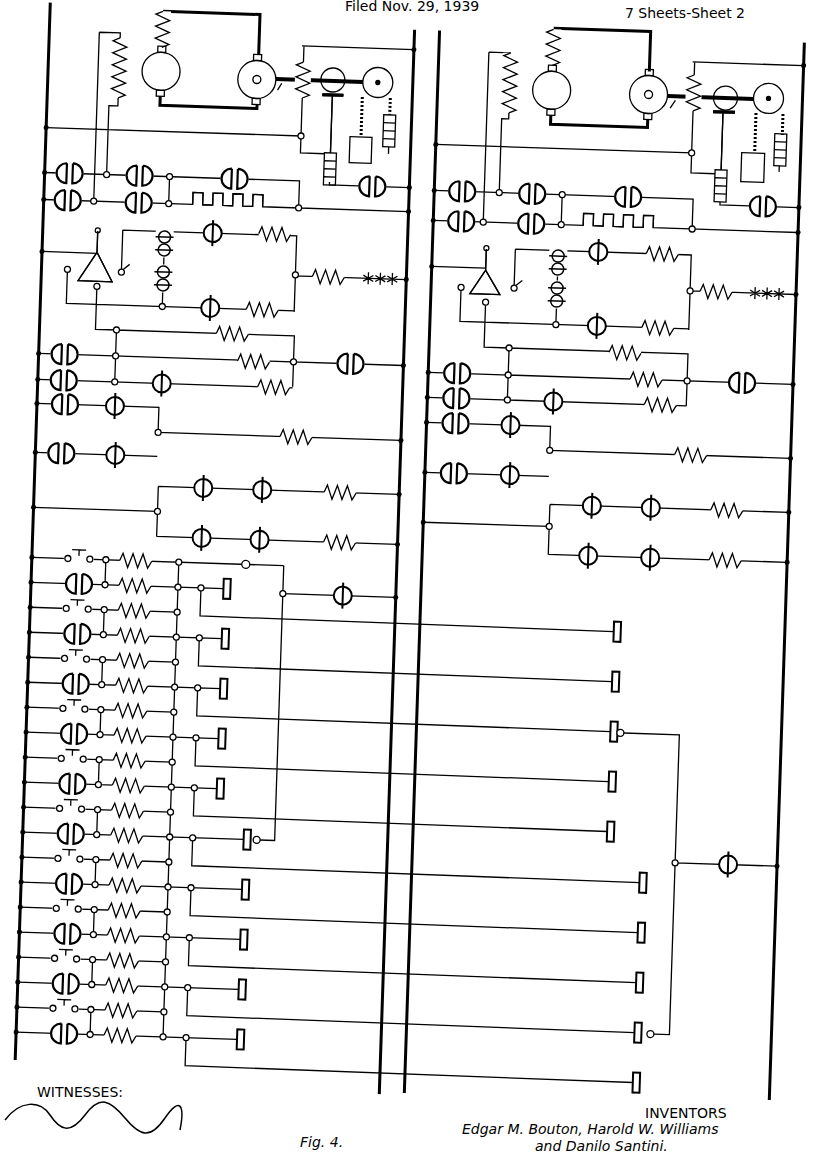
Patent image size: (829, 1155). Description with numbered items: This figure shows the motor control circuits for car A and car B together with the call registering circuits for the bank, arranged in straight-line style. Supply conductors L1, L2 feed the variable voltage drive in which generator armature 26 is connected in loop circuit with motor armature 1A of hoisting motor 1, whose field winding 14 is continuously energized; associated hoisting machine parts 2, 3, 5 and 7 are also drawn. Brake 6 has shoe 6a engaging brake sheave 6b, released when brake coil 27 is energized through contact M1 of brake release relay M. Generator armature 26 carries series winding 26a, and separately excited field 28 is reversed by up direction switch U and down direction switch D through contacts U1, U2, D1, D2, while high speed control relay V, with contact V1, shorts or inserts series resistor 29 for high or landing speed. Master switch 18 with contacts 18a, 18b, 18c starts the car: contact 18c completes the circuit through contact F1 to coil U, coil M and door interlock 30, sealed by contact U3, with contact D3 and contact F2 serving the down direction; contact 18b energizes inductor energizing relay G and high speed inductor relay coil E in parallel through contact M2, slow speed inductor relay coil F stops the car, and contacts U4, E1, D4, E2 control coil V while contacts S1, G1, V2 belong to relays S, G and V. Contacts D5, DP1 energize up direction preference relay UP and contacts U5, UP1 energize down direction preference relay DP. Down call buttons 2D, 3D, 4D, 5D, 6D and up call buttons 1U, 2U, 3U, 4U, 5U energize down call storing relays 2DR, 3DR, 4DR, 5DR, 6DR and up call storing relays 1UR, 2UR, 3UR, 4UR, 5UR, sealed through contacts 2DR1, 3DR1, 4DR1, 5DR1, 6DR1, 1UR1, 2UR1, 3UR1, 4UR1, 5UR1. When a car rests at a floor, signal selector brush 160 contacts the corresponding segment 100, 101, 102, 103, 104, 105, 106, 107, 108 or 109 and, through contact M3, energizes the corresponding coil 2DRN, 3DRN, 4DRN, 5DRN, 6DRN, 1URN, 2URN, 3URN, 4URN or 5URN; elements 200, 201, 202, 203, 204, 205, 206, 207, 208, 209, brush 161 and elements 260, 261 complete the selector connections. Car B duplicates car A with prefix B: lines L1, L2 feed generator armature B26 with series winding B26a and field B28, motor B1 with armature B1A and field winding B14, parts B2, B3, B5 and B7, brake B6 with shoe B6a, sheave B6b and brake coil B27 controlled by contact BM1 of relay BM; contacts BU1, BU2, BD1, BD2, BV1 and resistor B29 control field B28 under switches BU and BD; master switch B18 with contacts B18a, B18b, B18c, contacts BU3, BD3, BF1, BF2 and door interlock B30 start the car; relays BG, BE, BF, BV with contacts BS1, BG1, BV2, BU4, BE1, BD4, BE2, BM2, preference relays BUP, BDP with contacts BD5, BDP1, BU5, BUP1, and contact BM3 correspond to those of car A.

The supply line L1 is at (430, 1085).
The supply line L2 is at (787, 1078).
The resistor 28 is at (118, 58).
The field resistor 26a is at (152, 36).
The generator 26 is at (164, 70).
The motor 1 is at (265, 47).
The motor armature 1A is at (222, 87).
The motor shaft 7 is at (278, 98).
The resistor 14 is at (309, 77).
The drum 6b is at (340, 73).
The drum 2 is at (382, 76).
The drum bar 6a is at (327, 107).
The cable 6 is at (341, 124).
The counterweight A is at (358, 142).
The cable coil 3 is at (396, 121).
The cable 5 is at (388, 157).
The coil 27 is at (310, 176).
The contact M1 is at (382, 182).
The resistor 29 is at (239, 195).
The contact U1 is at (69, 167).
The contact D1 is at (147, 169).
The contact V1 is at (234, 173).
The contact D2 is at (67, 206).
The contact U2 is at (126, 198).
The relay coil F1 is at (199, 231).
The relay coil U is at (276, 229).
The relay U3 is at (178, 244).
The relay D3 is at (180, 279).
The relay coil M is at (328, 267).
The lamp 30 is at (379, 263).
The mercury switch 18 is at (72, 257).
The switch contact 18a is at (60, 262).
The switch contact 18b is at (91, 299).
The switch contact 18c is at (136, 266).
The relay coil F2 is at (217, 304).
The relay coil D is at (262, 302).
The relay coil G is at (232, 327).
The contact S1 is at (72, 348).
The relay coil E is at (253, 354).
The contact M2 is at (350, 358).
The contact G1 is at (73, 375).
The relay coil V2 is at (174, 380).
The relay coil F is at (273, 381).
The contact U4 is at (74, 400).
The relay coil E1 is at (126, 403).
The relay coil V is at (296, 427).
The contact D4 is at (61, 447).
The relay coil E2 is at (122, 449).
The relay coil D5 is at (201, 481).
The relay coil DP1 is at (257, 483).
The relay coil UP is at (340, 485).
The relay coil U5 is at (204, 530).
The relay coil UP1 is at (262, 531).
The relay coil DP is at (339, 534).
The terminal 160 is at (232, 557).
The relay coil M3 is at (351, 590).
The terminal 161 is at (266, 831).
The push button 5D is at (81, 549).
The resistor 5DR is at (136, 554).
The contact 5DR1 is at (66, 581).
The resistor 5DRN is at (146, 582).
The switch 100 is at (210, 586).
The switch 200 is at (624, 630).
The push button 4D is at (79, 599).
The resistor 4DR is at (134, 604).
The contact 4DR1 is at (64, 631).
The resistor 4DRN is at (144, 632).
The switch 101 is at (209, 636).
The switch 201 is at (624, 680).
The push button 3D is at (77, 649).
The resistor 3DR is at (132, 654).
The contact 3DR1 is at (62, 681).
The resistor 3DRN is at (142, 682).
The switch 102 is at (209, 686).
The switch 202 is at (624, 724).
The contact 260 is at (630, 723).
The push button 2D is at (76, 699).
The resistor 2DR is at (131, 704).
The contact 2DR1 is at (61, 730).
The resistor 2DRN is at (141, 732).
The switch 103 is at (208, 736).
The switch 203 is at (628, 781).
The push button 1U is at (74, 749).
The resistor 1UR is at (129, 754).
The contact 1UR1 is at (59, 780).
The resistor 1URN is at (139, 782).
The switch 104 is at (206, 787).
The switch 204 is at (628, 832).
The push button 6D is at (72, 799).
The resistor 6DR is at (127, 804).
The contact 6DR1 is at (57, 830).
The resistor 6DRN is at (137, 832).
The switch 105 is at (229, 837).
The switch 205 is at (622, 878).
The push button 5U is at (71, 849).
The resistor 5UR is at (126, 854).
The contact 5UR1 is at (56, 880).
The resistor 5URN is at (136, 882).
The switch 106 is at (230, 887).
The switch 206 is at (618, 930).
The push button 4U is at (69, 899).
The resistor 4UR is at (124, 904).
The contact 4UR1 is at (54, 930).
The resistor 4URN is at (134, 932).
The switch 107 is at (228, 935).
The switch 207 is at (619, 980).
The push button 3U is at (67, 949).
The resistor 3UR is at (122, 954).
The contact 3UR1 is at (52, 980).
The resistor 3URN is at (132, 982).
The switch 108 is at (227, 985).
The switch 208 is at (626, 1026).
The contact 261 is at (668, 1029).
The push button 2U is at (66, 999).
The resistor 2UR is at (121, 1004).
The contact 2UR1 is at (51, 1030).
The resistor 2URN is at (131, 1032).
The switch 109 is at (225, 1036).
The switch 209 is at (650, 1083).
The relay coil BM3 is at (717, 856).
The resistor B28 is at (500, 73).
The field resistor B26a is at (543, 42).
The generator B26 is at (566, 88).
The motor B1 is at (660, 52).
The motor armature B1A is at (614, 88).
The motor shaft B7 is at (667, 116).
The resistor B14 is at (706, 88).
The drum B6b is at (736, 89).
The drum B2 is at (774, 91).
The drum bar B6a is at (700, 105).
The cable B6 is at (738, 141).
The counterweight B is at (750, 163).
The cable coil B3 is at (775, 125).
The cable B5 is at (782, 181).
The coil B27 is at (702, 178).
The contact BM1 is at (763, 214).
The resistor B29 is at (630, 214).
The contact BU1 is at (461, 183).
The contact BD1 is at (532, 185).
The contact BV1 is at (623, 191).
The contact BD2 is at (462, 228).
The contact BU2 is at (516, 217).
The relay coil BF1 is at (614, 258).
The relay coil BU is at (675, 251).
The relay BU3 is at (573, 267).
The relay BD3 is at (575, 295).
The relay coil BM is at (716, 283).
The lamp B30 is at (771, 271).
The mercury switch B18 is at (462, 264).
The switch contact B18a is at (460, 280).
The switch contact B18b is at (480, 302).
The switch contact B18c is at (532, 282).
The relay coil BF2 is at (591, 319).
The relay coil BD is at (656, 319).
The relay coil BG is at (633, 348).
The contact BS1 is at (459, 367).
The relay coil BE is at (648, 372).
The contact BM2 is at (740, 376).
The contact BG1 is at (471, 392).
The relay coil BV2 is at (571, 400).
The relay coil BF is at (660, 399).
The contact BU4 is at (470, 417).
The relay coil BE1 is at (525, 424).
The relay coil BV is at (691, 447).
The contact BD4 is at (458, 467).
The relay coil BE2 is at (516, 469).
The relay coil BD5 is at (584, 498).
The relay coil BDP1 is at (650, 500).
The relay coil BUP is at (727, 500).
The relay coil BU5 is at (580, 548).
The relay coil BUP1 is at (645, 549).
The relay coil BDP is at (722, 552).